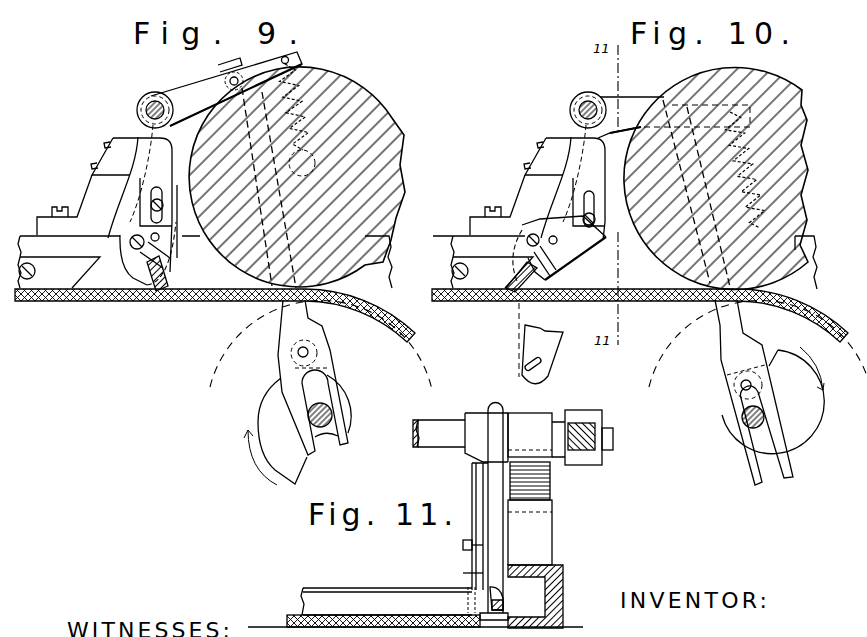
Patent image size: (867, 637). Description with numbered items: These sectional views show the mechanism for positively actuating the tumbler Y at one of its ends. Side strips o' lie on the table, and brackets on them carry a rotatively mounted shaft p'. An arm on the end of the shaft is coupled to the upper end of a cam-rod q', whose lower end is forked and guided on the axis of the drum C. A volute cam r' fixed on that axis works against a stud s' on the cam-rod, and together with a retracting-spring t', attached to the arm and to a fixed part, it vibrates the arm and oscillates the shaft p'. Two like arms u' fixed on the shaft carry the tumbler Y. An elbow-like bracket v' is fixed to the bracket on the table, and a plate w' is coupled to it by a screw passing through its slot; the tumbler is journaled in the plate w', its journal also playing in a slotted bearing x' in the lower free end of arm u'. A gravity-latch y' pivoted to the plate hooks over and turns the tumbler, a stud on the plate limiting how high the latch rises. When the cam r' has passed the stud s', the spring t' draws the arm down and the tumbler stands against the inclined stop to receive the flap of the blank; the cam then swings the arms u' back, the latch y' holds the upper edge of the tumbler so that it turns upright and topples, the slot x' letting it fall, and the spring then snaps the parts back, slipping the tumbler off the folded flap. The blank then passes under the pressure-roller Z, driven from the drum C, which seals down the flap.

In FIG. 9, the pressure-roller Z is at (298, 177).
In FIG. 10, the pressure-roller Z is at (716, 169).
In FIG. 9, the shaft p' is at (138, 109).
In FIG. 10, the shaft p' is at (589, 100).
In FIG. 11, the shaft p' is at (460, 430).
In FIG. 9, the retracting-spring t' is at (302, 113).
In FIG. 10, the retracting-spring t' is at (746, 170).
In FIG. 9, the arms u' is at (164, 202).
In FIG. 10, the arms u' is at (565, 251).
In FIG. 11, the arms u' is at (494, 512).
In FIG. 9, the elbow-like bracket v' is at (131, 181).
In FIG. 10, the elbow-like bracket v' is at (564, 181).
In FIG. 11, the elbow-like bracket v' is at (470, 538).
In FIG. 9, the stud z' is at (141, 239).
In FIG. 10, the stud z' is at (542, 248).
In FIG. 9, the gravity-latch y' is at (148, 253).
In FIG. 10, the gravity-latch y' is at (540, 256).
In FIG. 11, the gravity-latch y' is at (465, 572).
In FIG. 9, the tumbler Y is at (167, 270).
In FIG. 10, the tumbler Y is at (514, 283).
In FIG. 11, the tumbler Y is at (383, 597).
In FIG. 9, the side strips o' is at (206, 262).
In FIG. 10, the side strips o' is at (625, 262).
In FIG. 11, the side strips o' is at (543, 596).
In FIG. 9, the drum C is at (223, 339).
In FIG. 10, the drum C is at (649, 339).
In FIG. 9, the cam-rod q' is at (313, 377).
In FIG. 10, the cam-rod q' is at (754, 392).
In FIG. 9, the stud s' is at (292, 353).
In FIG. 10, the stud s' is at (735, 385).
In FIG. 9, the volute cam r' is at (297, 430).
In FIG. 10, the volute cam r' is at (773, 400).
In FIG. 10, the slotted bearing x' is at (544, 343).
In FIG. 9, the plate w' is at (187, 221).
In FIG. 10, the plate w' is at (564, 248).
In FIG. 11, the plate w' is at (498, 579).